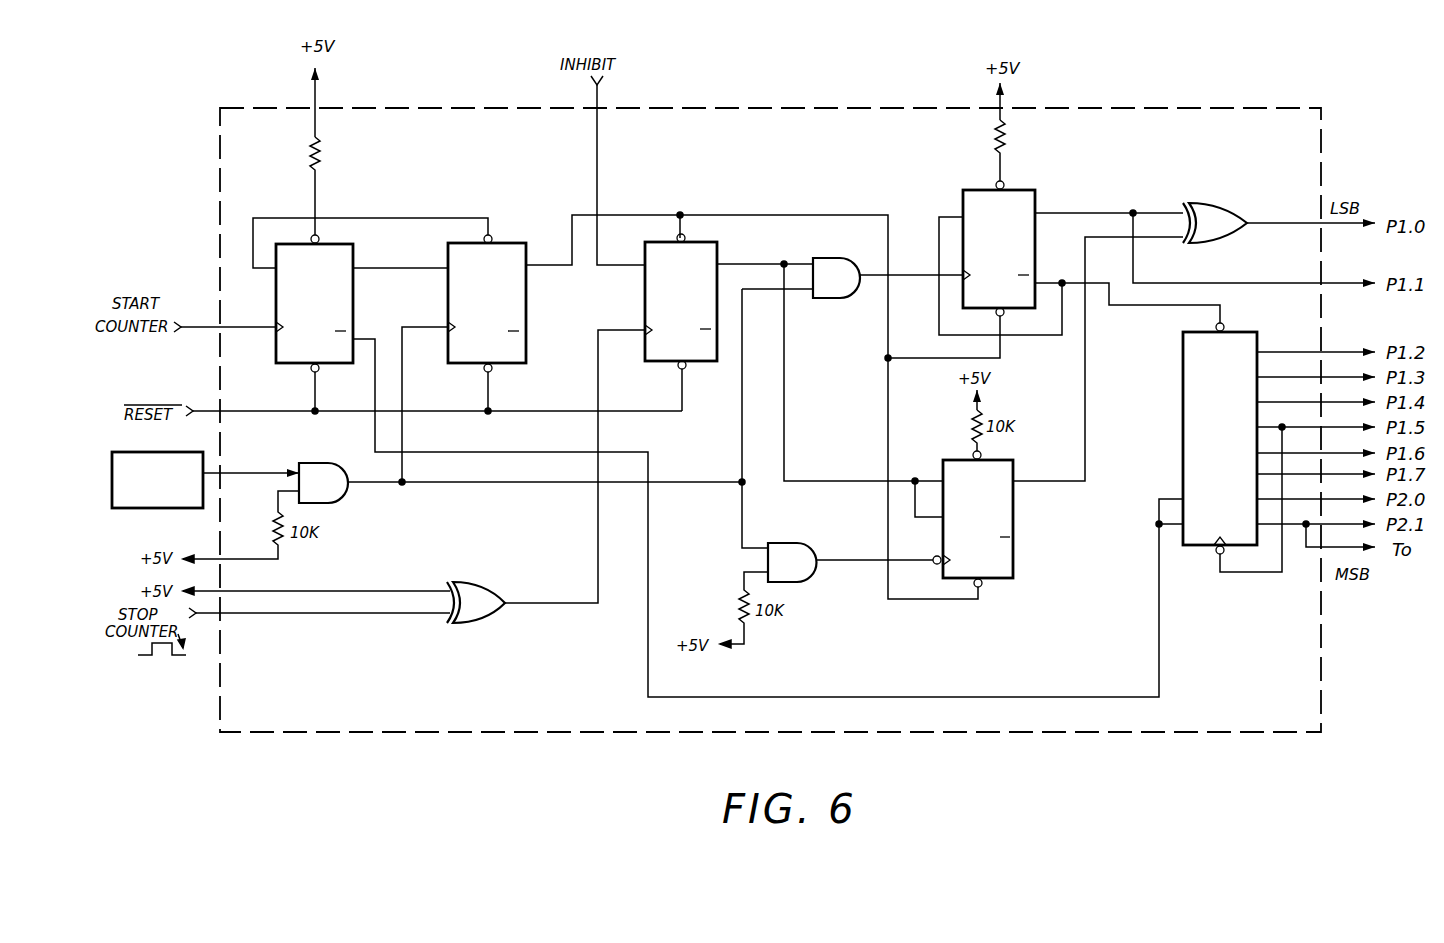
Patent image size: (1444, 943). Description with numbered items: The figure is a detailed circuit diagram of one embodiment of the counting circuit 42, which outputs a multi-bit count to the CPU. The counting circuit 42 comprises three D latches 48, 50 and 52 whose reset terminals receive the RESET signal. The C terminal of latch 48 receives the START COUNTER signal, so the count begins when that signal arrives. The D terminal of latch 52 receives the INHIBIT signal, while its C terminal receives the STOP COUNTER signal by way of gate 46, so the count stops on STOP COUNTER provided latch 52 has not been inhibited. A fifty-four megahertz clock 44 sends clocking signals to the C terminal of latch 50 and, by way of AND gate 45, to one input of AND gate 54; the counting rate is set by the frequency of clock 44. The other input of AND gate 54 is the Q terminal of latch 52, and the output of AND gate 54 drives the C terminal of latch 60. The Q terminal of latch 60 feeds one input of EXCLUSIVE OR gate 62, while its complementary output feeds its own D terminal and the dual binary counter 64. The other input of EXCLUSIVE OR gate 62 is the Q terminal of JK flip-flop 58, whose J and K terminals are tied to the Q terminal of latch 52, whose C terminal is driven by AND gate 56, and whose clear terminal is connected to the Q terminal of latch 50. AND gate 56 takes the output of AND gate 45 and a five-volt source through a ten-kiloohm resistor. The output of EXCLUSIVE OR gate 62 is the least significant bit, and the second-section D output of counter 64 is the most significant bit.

The counting circuit 42 is at (770, 408).
The 54-MHz clock 44 is at (157, 497).
The AND gate 45 is at (340, 491).
The AND gate 46 is at (476, 618).
The D latch 48 is at (334, 303).
The D latch 50 is at (506, 303).
The D latch 52 is at (684, 319).
The AND gate 54 is at (836, 299).
The AND gate 56 is at (792, 551).
The JK flip-flop 58 is at (996, 519).
The latch 60 is at (984, 238).
The EXCLUSIVE OR gate 62 is at (1218, 211).
The dual binary counter 64 is at (1200, 438).